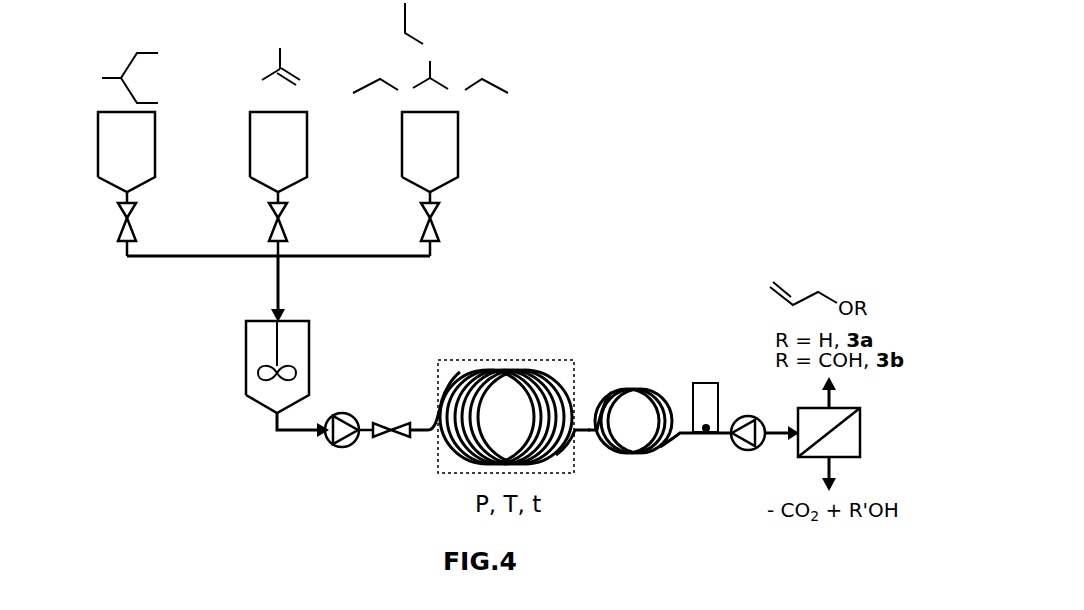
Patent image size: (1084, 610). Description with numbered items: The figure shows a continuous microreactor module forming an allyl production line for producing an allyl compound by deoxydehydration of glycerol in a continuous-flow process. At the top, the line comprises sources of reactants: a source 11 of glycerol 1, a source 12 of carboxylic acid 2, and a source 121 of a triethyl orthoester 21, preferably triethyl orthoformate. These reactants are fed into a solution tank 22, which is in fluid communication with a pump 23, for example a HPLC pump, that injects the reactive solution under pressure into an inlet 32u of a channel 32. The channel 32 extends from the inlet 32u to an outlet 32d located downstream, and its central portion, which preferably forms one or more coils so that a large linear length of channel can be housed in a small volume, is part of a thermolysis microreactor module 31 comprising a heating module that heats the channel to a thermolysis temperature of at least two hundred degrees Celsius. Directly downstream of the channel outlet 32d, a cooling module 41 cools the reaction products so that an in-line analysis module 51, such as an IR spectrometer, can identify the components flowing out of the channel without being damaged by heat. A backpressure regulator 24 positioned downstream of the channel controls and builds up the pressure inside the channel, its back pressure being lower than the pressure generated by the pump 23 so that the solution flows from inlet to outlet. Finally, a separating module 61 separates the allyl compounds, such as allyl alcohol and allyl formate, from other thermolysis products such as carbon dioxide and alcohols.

The glycerol 1 is at (103, 57).
The carboxylic acid 2 is at (264, 53).
The triethyl orthoester 21 is at (452, 68).
The source of glycerol 11 is at (156, 163).
The source of carboxylic acid 12 is at (308, 162).
The source of triethyl orthoester 121 is at (459, 155).
The solution tank 22 is at (245, 358).
The pump 23 is at (333, 416).
The channel inlet 32u is at (412, 423).
The thermolysis microreactor module 31 is at (540, 332).
The channel 32 is at (485, 371).
The channel outlet 32d is at (592, 437).
The cooling module 41 is at (633, 389).
The in-line analysis module 51 is at (705, 383).
The backpressure regulator 24 is at (748, 450).
The separating module 61 is at (799, 415).